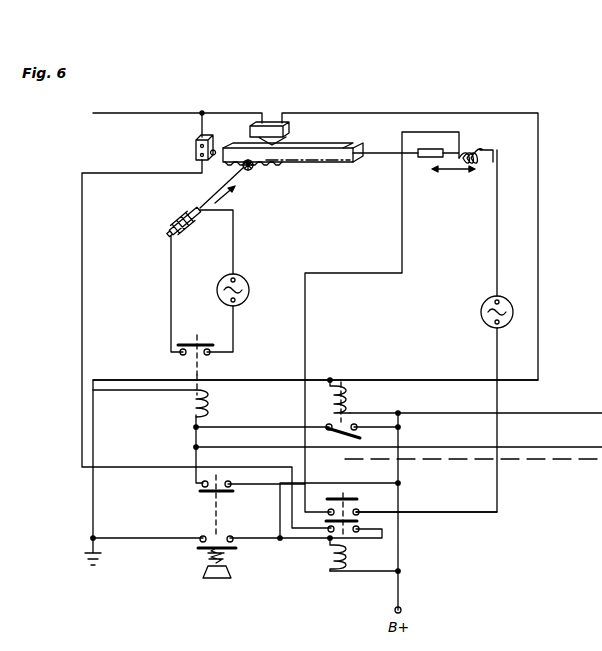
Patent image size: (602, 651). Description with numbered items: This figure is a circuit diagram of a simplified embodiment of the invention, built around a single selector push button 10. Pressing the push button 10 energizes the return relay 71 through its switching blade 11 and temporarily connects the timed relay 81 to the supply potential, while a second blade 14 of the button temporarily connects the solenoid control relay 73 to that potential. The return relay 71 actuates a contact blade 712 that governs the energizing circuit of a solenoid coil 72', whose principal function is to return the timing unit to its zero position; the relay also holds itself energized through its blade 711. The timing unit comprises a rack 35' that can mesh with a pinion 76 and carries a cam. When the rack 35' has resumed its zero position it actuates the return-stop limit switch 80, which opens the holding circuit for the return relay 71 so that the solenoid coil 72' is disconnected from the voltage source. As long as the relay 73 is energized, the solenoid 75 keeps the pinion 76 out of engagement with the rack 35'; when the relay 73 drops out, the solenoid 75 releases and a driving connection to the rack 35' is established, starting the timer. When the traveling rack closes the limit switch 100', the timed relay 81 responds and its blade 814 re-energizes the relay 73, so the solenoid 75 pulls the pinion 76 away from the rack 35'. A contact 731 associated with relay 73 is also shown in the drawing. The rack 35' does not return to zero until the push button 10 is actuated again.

The return-stop limit switch 80 is at (195, 152).
The limit switch 100′ is at (290, 131).
The rack 35′ is at (322, 155).
The pinion 76 is at (253, 168).
The solenoid 75 is at (178, 214).
The solenoid coil 72′ is at (484, 144).
The relay contact 731 is at (183, 342).
The solenoid control relay 73 is at (207, 403).
The timed relay 81 is at (352, 402).
The blade 814 is at (345, 440).
The second blade 14 is at (237, 491).
The contact blade 712 is at (357, 501).
The blade 711 is at (360, 521).
The return relay 71 is at (350, 553).
The switching blade 11 is at (234, 550).
The selector push button 10 is at (226, 576).